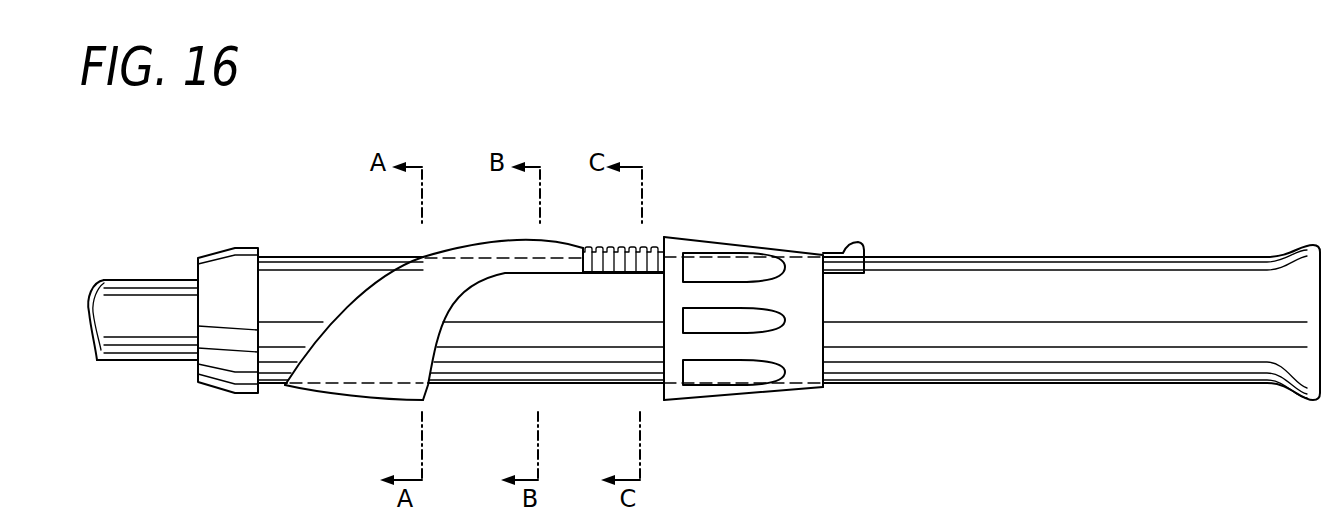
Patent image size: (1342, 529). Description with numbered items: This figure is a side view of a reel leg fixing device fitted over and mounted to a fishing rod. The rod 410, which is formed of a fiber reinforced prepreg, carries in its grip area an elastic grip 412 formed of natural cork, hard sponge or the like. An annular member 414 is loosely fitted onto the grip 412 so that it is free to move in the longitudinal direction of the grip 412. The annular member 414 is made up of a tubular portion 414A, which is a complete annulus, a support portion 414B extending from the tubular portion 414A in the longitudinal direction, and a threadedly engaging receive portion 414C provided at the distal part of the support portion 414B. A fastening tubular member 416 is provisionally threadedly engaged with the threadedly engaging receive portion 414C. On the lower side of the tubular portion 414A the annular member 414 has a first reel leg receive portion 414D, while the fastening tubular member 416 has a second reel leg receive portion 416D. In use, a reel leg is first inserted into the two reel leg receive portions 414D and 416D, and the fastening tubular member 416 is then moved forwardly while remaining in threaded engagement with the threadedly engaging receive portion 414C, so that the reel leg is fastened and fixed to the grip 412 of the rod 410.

The rod 410 is at (137, 298).
The grip 412 is at (908, 280).
The annular member 414 is at (552, 311).
The tubular portion 414A is at (302, 387).
The support portion 414B is at (498, 250).
The threadedly engaging receive portion 414C is at (600, 250).
The first reel leg receive portion 414D is at (427, 403).
The fastening tubular member 416 is at (759, 348).
The second reel leg receive portion 416D is at (661, 399).